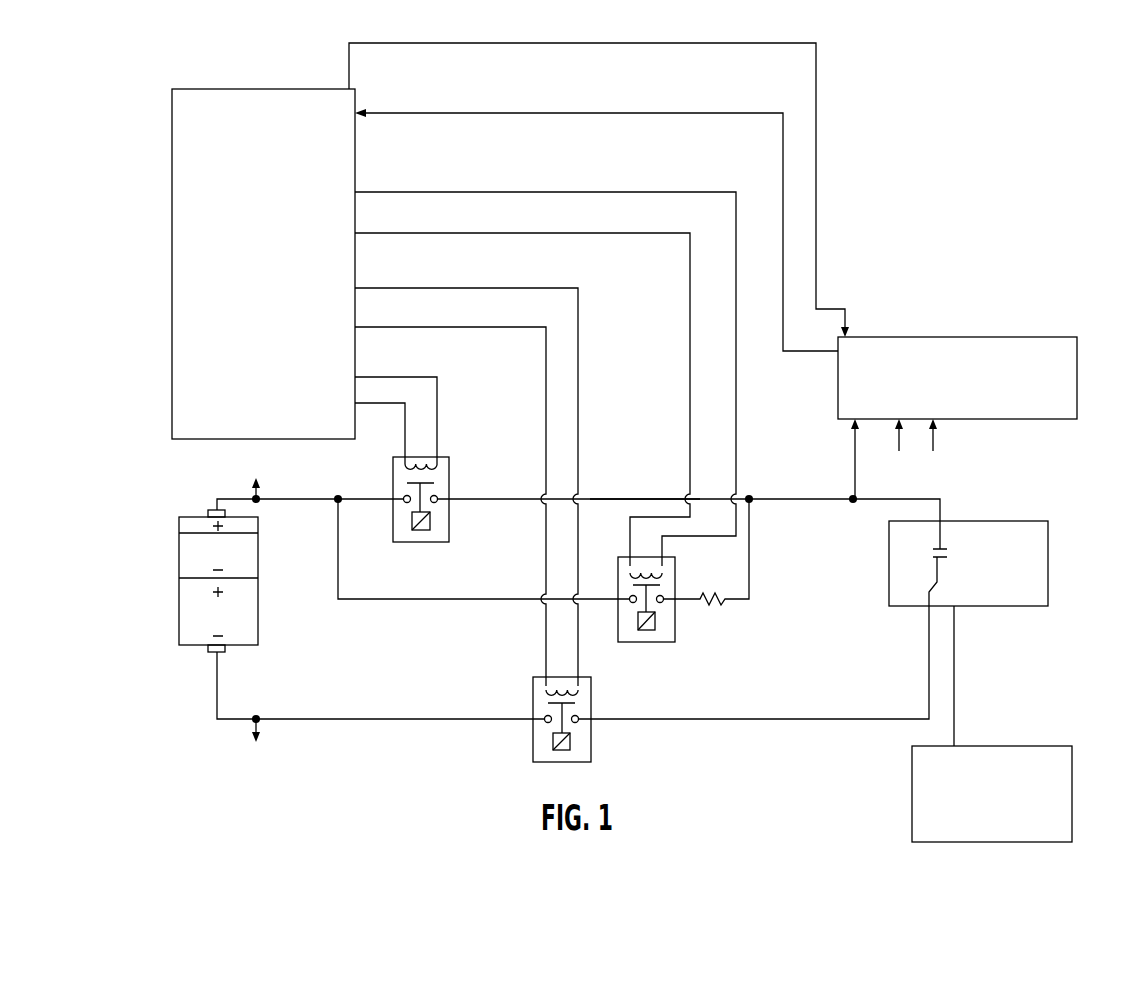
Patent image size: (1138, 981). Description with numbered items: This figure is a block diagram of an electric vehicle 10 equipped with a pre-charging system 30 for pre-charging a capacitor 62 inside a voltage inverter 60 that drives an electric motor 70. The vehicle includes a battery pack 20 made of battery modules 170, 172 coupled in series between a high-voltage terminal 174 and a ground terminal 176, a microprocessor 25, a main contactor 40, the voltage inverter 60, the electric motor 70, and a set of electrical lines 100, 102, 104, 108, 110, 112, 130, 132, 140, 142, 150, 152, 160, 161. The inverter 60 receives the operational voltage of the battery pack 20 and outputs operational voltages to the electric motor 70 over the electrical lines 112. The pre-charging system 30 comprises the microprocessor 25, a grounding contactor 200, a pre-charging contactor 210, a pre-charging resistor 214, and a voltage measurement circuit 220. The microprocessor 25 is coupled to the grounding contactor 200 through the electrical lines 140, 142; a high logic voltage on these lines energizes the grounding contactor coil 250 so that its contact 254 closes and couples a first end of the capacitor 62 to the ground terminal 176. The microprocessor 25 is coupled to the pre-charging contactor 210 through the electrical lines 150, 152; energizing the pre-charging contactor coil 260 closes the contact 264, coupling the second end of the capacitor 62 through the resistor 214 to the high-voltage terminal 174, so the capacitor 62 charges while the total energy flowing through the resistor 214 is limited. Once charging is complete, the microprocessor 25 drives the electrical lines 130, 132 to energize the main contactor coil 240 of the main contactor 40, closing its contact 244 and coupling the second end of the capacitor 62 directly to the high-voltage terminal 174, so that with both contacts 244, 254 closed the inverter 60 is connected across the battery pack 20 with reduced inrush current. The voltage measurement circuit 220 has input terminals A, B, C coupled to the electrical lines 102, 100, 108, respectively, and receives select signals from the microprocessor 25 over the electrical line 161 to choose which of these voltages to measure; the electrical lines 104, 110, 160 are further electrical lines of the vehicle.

The electric vehicle 10 is at (860, 145).
The battery pack 20 is at (214, 581).
The microprocessor 25 is at (272, 89).
The pre-charging system 30 is at (872, 330).
The main contactor 40 is at (446, 479).
The voltage inverter 60 is at (968, 544).
The capacitor 62 is at (934, 553).
The electric motor 70 is at (1035, 746).
The electrical line 100 is at (280, 499).
The electrical line 102 is at (610, 499).
The electrical line 104 is at (428, 599).
The electrical line 108 is at (358, 719).
The electrical line 110 is at (725, 719).
The electrical lines 112 is at (954, 665).
The electrical line 130 is at (395, 377).
The electrical line 132 is at (390, 395).
The electrical line 140 is at (405, 288).
The electrical line 142 is at (405, 327).
The electrical line 150 is at (420, 192).
The electrical line 152 is at (420, 233).
The electrical line 160 is at (440, 113).
The electrical line 161 is at (468, 43).
The battery module 170 is at (179, 545).
The battery module 172 is at (179, 613).
The high-voltage terminal 174 is at (208, 513).
The ground terminal 176 is at (210, 652).
The grounding contactor 200 is at (600, 702).
The pre-charging contactor 210 is at (655, 577).
The pre-charging resistor 214 is at (718, 603).
The voltage measurement circuit 220 is at (975, 337).
The main contactor coil 240 is at (420, 458).
The contact 244 is at (440, 503).
The grounding contactor coil 250 is at (560, 690).
The contact 254 is at (580, 708).
The pre-charging contactor coil 260 is at (637, 570).
The contact 264 is at (633, 585).